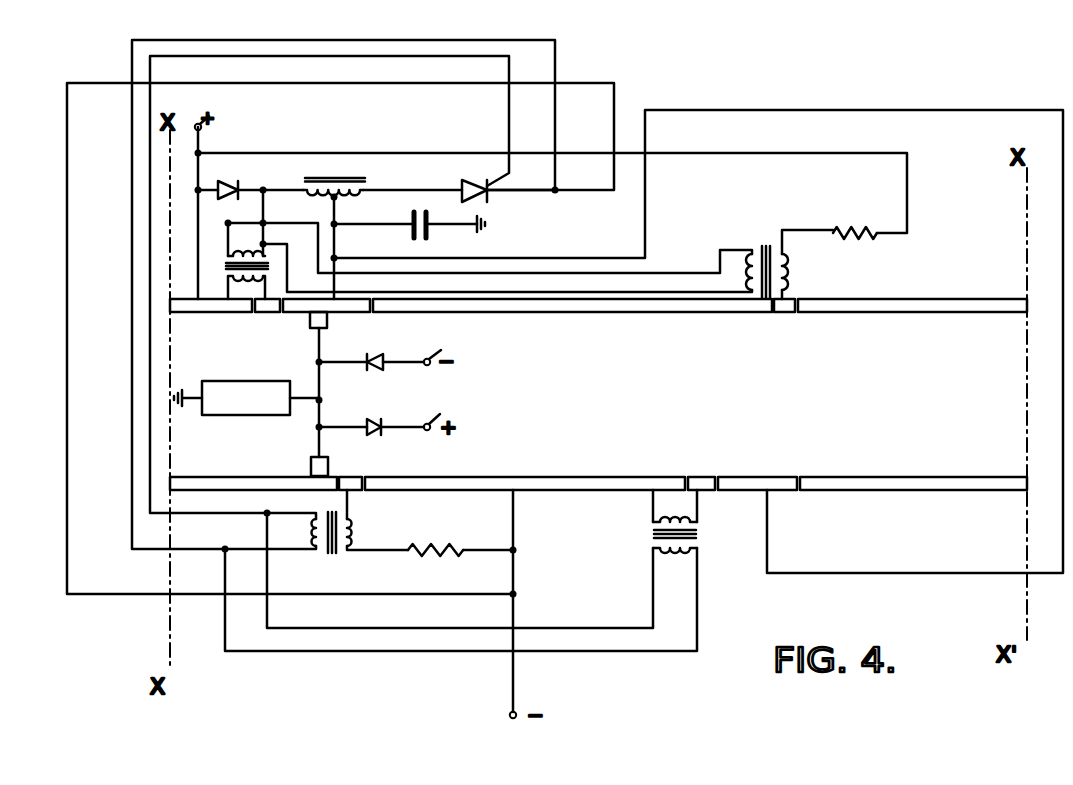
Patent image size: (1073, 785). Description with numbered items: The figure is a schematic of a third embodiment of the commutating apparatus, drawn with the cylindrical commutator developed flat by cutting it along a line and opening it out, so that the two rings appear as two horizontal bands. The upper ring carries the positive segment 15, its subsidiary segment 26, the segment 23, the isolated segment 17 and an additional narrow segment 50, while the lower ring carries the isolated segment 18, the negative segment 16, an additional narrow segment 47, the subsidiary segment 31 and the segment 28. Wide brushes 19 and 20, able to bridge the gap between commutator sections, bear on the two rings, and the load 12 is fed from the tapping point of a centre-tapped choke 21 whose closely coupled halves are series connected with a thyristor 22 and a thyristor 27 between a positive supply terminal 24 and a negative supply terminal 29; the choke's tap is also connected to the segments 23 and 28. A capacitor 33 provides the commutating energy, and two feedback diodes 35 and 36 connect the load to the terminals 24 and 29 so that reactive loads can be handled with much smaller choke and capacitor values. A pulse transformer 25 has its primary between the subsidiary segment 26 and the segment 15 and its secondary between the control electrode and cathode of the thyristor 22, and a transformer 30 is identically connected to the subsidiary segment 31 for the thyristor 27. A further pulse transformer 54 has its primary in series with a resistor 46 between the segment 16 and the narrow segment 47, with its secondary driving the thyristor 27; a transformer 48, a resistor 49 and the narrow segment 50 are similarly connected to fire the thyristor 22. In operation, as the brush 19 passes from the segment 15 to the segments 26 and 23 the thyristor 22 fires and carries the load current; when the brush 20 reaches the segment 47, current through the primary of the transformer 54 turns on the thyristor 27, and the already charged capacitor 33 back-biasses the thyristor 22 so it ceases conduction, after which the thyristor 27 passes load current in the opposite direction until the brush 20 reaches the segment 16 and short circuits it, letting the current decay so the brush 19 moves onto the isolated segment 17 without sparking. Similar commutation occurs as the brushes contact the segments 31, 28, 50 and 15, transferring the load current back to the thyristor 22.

The load 12 is at (284, 380).
The positive segment 15 is at (219, 315).
The negative segment 16 is at (545, 478).
The isolated segment 17 is at (646, 313).
The isolated segment 18 is at (250, 478).
The brush 19 is at (311, 318).
The brush 20 is at (310, 457).
The centre-tapped choke 21 is at (335, 175).
The thyristor 22 is at (237, 184).
The segment 23 is at (349, 313).
The supply terminal 24 is at (332, 240).
The pulse transformer 25 is at (223, 277).
The subsidiary segment 26 is at (268, 313).
The thyristor 27 is at (463, 180).
The segment 28 is at (788, 477).
The supply terminal 29 is at (510, 715).
The transformer 30 is at (645, 544).
The subsidiary segment 31 is at (710, 477).
The capacitor 33 is at (429, 234).
The feedback diode 35 is at (381, 354).
The feedback diode 36 is at (370, 417).
The resistor 46 is at (436, 535).
The narrow segment 47 is at (354, 478).
The transformer 48 is at (772, 239).
The resistor 49 is at (853, 233).
The narrow segment 50 is at (786, 313).
The pulse transformer 54 is at (380, 586).